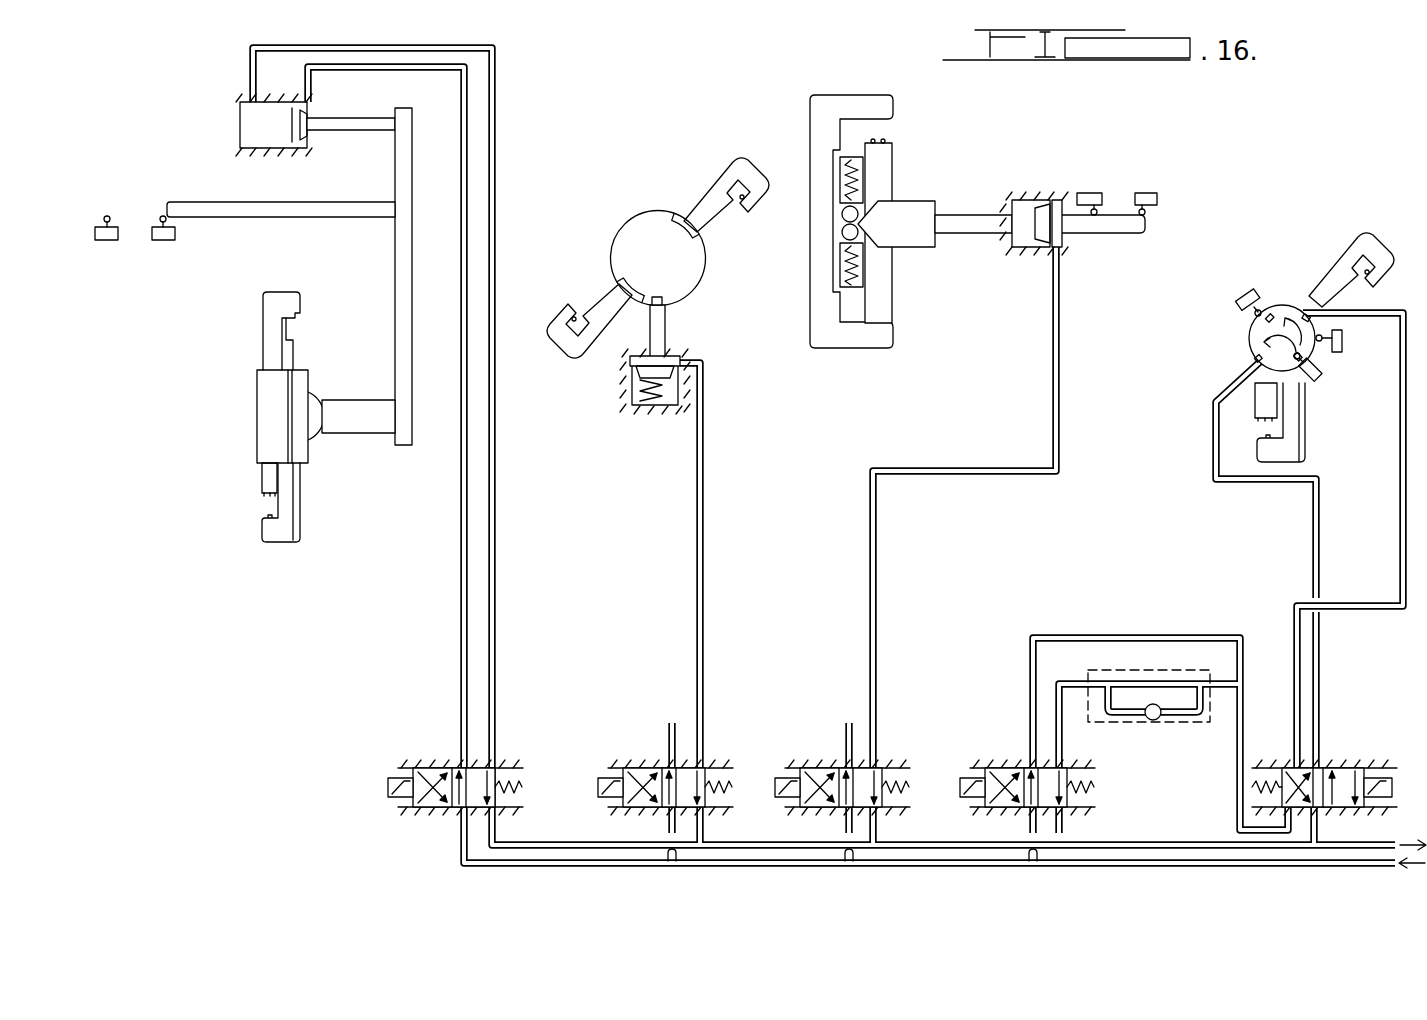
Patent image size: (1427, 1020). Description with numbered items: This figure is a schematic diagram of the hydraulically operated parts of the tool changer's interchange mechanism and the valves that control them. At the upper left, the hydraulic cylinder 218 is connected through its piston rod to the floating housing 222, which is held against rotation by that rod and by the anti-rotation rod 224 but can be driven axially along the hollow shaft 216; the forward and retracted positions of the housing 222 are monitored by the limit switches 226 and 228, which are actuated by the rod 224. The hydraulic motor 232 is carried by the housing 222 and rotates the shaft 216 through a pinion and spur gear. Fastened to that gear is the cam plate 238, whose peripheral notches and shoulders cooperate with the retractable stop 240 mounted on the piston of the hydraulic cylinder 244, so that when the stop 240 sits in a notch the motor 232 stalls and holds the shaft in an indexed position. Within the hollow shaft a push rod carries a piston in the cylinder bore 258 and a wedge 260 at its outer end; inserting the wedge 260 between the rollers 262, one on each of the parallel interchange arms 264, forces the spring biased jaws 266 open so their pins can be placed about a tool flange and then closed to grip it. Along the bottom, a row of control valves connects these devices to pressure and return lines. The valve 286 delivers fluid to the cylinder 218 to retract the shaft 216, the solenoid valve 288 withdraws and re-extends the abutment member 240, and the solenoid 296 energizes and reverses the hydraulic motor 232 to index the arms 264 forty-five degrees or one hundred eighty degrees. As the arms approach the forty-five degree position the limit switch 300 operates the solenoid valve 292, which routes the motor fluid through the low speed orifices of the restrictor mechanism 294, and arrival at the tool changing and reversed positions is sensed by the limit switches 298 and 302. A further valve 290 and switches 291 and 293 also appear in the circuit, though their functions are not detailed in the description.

The hollow shaft 216 is at (345, 405).
The hydraulic cylinder 218 is at (257, 125).
The floating housing 222 is at (396, 163).
The anti-rotation rod 224 is at (313, 212).
The limit switch 226 is at (162, 242).
The limit switch 228 is at (108, 242).
The hydraulic motor 232 is at (1250, 333).
The cam plate 238 is at (632, 230).
The retractable stop 240 is at (662, 325).
The hydraulic cylinder 244 is at (640, 395).
The cylinder bore 258 is at (1020, 205).
The wedge 260 is at (912, 210).
The rollers 262 is at (842, 232).
The interchange arms 264 is at (262, 478).
The jaws 266 is at (268, 532).
The valve 286 is at (478, 775).
The solenoid valve 288 is at (695, 775).
The control valve 290 is at (870, 775).
The limit switch 291 is at (1092, 192).
The solenoid valve 292 is at (1055, 797).
The limit switch 293 is at (1158, 192).
The restrictor mechanism 294 is at (1160, 715).
The solenoid 296 is at (1340, 775).
The limit switch 298 is at (1268, 300).
The limit switch 300 is at (1340, 347).
The limit switch 302 is at (1316, 384).